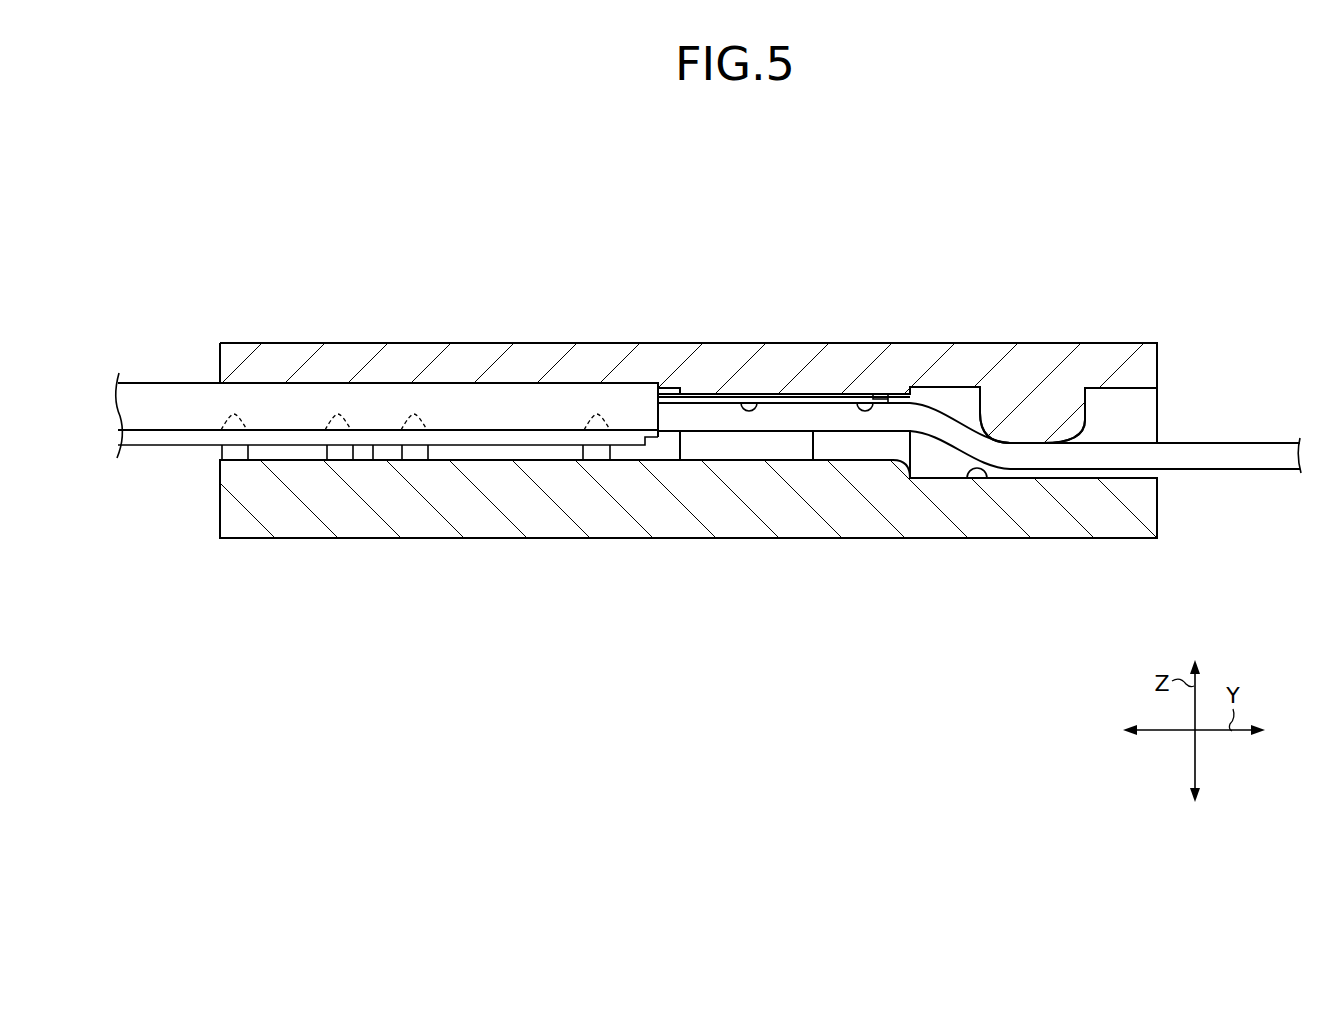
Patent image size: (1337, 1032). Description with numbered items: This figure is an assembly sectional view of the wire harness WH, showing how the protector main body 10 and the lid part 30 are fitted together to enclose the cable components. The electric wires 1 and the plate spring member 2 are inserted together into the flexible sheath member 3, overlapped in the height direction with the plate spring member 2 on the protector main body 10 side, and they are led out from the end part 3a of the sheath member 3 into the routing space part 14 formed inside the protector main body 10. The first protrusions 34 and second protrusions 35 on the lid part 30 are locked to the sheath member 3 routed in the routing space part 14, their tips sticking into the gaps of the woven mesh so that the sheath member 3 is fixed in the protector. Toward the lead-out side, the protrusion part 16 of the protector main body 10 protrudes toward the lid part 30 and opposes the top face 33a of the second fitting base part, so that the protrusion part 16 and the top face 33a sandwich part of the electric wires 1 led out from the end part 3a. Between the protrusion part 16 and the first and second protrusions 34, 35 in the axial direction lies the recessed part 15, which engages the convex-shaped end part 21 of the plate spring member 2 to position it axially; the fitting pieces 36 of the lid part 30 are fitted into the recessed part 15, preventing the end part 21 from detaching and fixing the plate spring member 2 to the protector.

The wire harness WH is at (1040, 216).
The electric wire 1 is at (1284, 442).
The plate spring member 2 is at (752, 410).
The sheath member 3 is at (176, 393).
The end part of the sheath member 3a is at (582, 412).
The protector main body 10 is at (454, 356).
The routing space part 14 is at (718, 455).
The recessed part 15 is at (784, 528).
The protrusion part 16 is at (1073, 428).
The end part of the plate spring member 21 is at (862, 405).
The lid part 30 is at (490, 527).
The top face of the second fitting base part 33a is at (970, 480).
The first protrusions 34 is at (333, 452).
The second protrusions 35 is at (413, 452).
The fitting pieces 36 is at (848, 445).